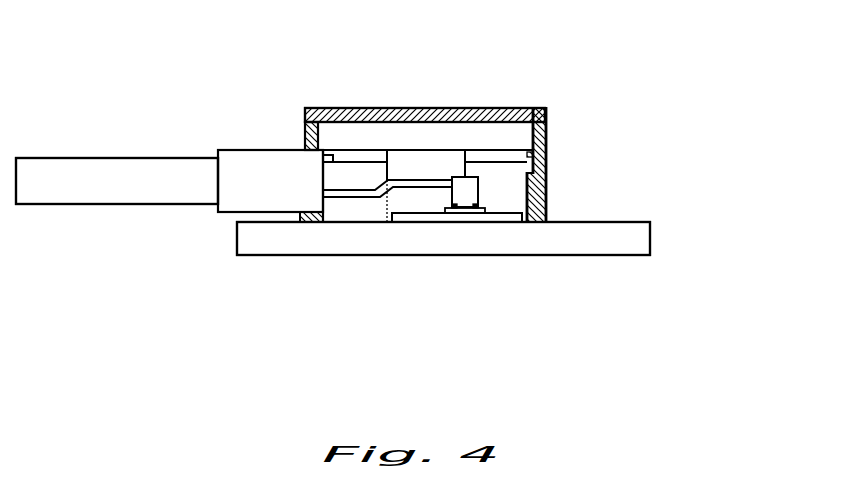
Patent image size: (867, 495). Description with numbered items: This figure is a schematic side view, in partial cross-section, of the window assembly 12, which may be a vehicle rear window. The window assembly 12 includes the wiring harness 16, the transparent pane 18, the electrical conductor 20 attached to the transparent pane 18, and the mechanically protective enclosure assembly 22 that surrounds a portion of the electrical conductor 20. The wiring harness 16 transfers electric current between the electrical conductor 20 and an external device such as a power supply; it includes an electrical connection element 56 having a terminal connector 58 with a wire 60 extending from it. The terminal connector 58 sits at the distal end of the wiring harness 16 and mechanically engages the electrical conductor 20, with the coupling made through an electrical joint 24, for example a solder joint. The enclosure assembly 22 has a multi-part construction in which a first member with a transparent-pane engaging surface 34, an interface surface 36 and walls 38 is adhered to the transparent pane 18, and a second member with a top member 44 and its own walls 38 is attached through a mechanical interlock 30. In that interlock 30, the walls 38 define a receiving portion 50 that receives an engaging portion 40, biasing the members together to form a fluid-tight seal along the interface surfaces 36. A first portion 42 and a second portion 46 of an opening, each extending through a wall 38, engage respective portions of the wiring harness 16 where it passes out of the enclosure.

The window assembly 12 is at (693, 140).
The wiring harness 16 is at (103, 148).
The transparent pane 18 is at (642, 243).
The electrical conductor 20 is at (428, 213).
The enclosure assembly 22 is at (428, 104).
The electrical joint 24 is at (453, 208).
The mechanical interlock 30 is at (549, 155).
The transparent-pane engaging surface 34 is at (310, 225).
The interface surface 36 is at (546, 173).
The walls 38 is at (546, 115).
The engaging portion 40 is at (402, 158).
The first portion of the opening 42 is at (308, 212).
The top member 44 is at (527, 110).
The second portion of the opening 46 is at (307, 157).
The receiving portion 50 is at (474, 158).
The electrical connection element 56 is at (362, 203).
The terminal connector 58 is at (480, 198).
The wire 60 is at (125, 193).